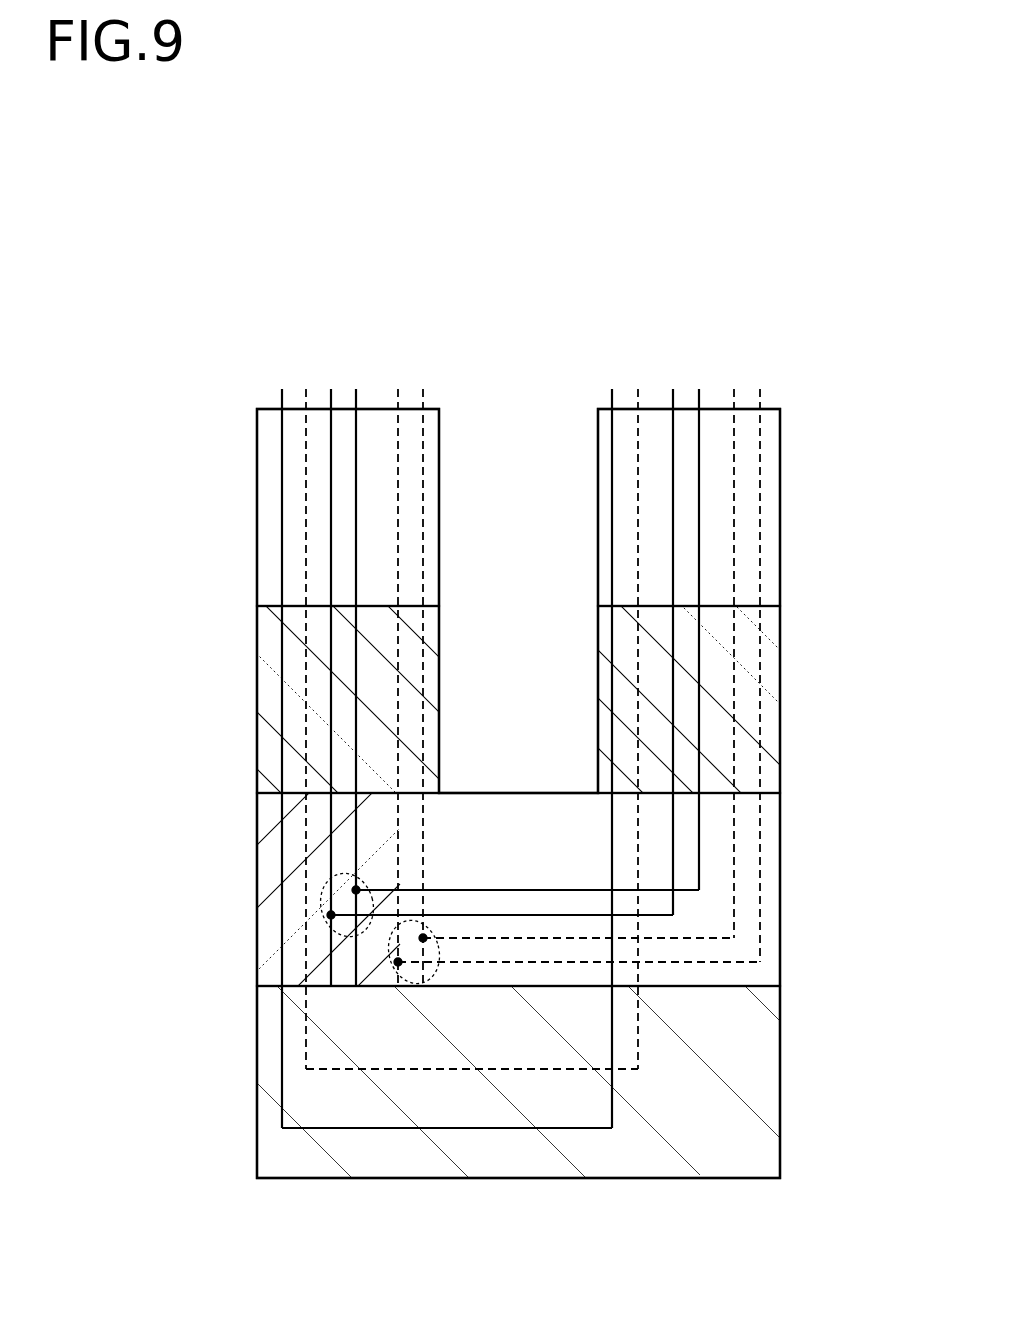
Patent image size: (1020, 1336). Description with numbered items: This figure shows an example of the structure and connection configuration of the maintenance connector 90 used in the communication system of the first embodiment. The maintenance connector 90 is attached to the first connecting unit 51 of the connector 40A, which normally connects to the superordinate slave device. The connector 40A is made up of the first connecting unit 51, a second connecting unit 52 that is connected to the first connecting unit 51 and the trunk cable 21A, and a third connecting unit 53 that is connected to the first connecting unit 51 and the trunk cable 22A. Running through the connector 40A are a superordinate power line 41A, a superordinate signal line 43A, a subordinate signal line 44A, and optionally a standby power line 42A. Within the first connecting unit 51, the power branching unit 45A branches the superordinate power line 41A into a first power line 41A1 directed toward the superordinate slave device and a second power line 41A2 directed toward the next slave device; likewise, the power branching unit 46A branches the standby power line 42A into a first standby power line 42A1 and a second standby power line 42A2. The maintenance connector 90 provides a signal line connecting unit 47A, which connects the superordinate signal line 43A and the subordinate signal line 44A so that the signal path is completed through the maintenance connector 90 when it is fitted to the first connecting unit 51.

The trunk cable 21A is at (240, 518).
The trunk cable 22A is at (790, 487).
The connector 40A is at (175, 781).
The superordinate power line 41A is at (357, 387).
The first power line 41A1 is at (362, 972).
The second power line 41A2 is at (515, 928).
The standby power line 42A is at (424, 387).
The first standby power line 42A1 is at (398, 982).
The second standby power line 42A2 is at (563, 928).
The superordinate signal line 43A is at (308, 387).
The subordinate signal line 44A is at (647, 387).
The power branching unit 45A is at (321, 903).
The power branching unit 46A is at (389, 972).
The signal line connecting unit 47A is at (513, 1062).
The first connecting unit 51 is at (790, 872).
The second connecting unit 52 is at (240, 664).
The third connecting unit 53 is at (790, 665).
The maintenance connector 90 is at (343, 1180).